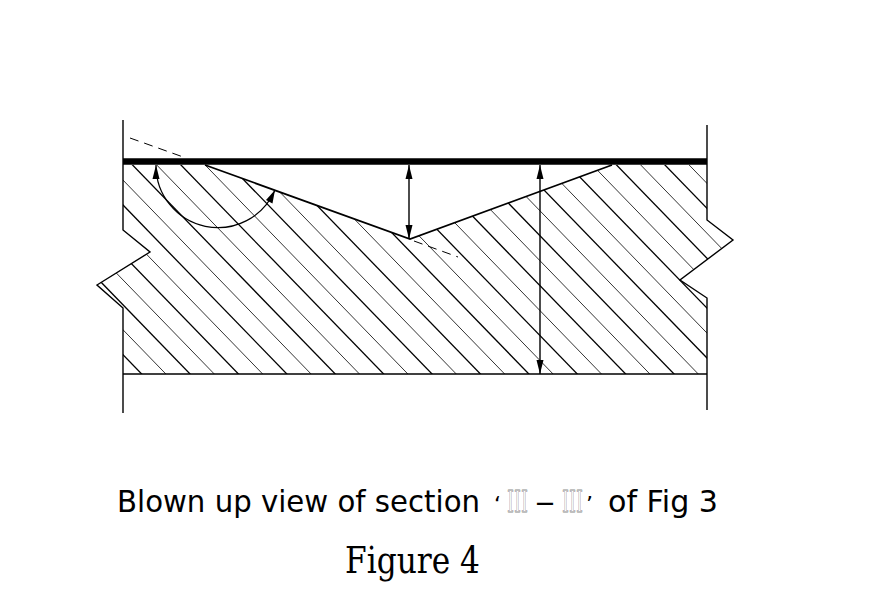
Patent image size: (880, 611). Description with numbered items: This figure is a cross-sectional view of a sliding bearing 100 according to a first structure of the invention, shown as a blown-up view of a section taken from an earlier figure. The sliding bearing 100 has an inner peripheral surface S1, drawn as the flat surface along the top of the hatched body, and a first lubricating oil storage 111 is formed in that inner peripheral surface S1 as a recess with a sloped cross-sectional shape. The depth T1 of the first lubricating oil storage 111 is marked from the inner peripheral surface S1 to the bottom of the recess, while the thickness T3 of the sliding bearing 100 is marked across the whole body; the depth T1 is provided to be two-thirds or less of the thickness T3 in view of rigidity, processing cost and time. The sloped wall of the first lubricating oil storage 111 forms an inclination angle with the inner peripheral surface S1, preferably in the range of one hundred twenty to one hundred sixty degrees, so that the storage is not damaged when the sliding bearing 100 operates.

The sliding bearing 100 is at (387, 335).
The first lubricating oil storage 111 is at (321, 188).
The inner peripheral surface S1 is at (585, 158).
The depth of the first lubricating oil storage T1 is at (408, 203).
The thickness of the sliding bearing T3 is at (538, 264).